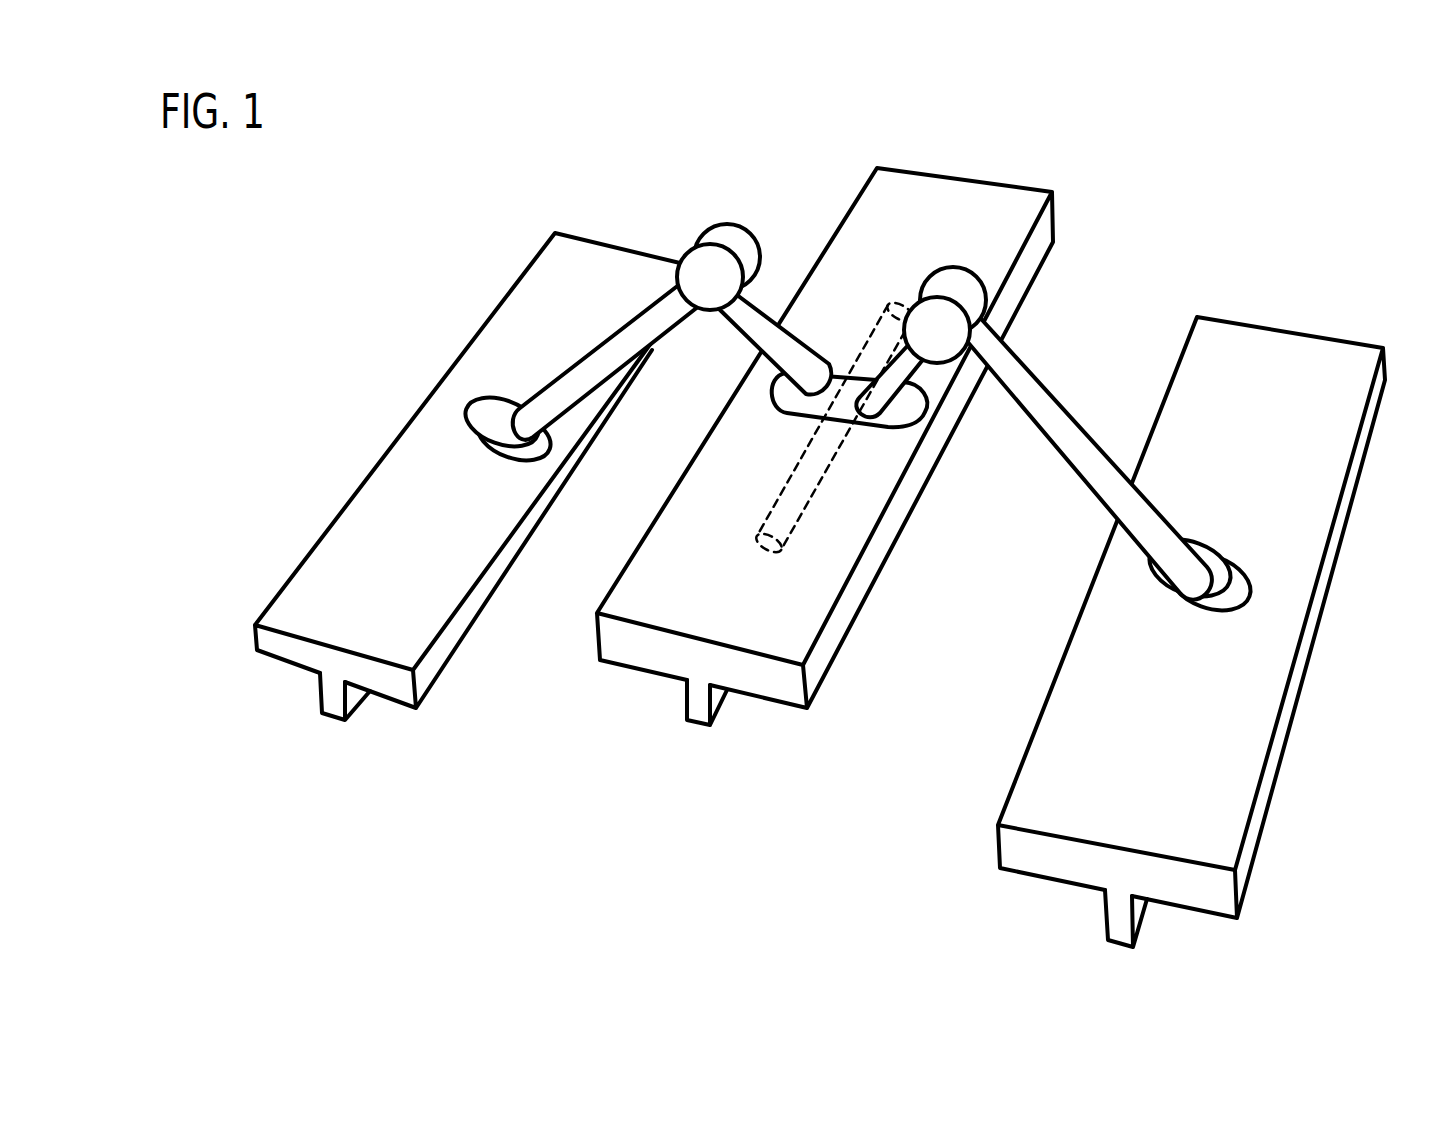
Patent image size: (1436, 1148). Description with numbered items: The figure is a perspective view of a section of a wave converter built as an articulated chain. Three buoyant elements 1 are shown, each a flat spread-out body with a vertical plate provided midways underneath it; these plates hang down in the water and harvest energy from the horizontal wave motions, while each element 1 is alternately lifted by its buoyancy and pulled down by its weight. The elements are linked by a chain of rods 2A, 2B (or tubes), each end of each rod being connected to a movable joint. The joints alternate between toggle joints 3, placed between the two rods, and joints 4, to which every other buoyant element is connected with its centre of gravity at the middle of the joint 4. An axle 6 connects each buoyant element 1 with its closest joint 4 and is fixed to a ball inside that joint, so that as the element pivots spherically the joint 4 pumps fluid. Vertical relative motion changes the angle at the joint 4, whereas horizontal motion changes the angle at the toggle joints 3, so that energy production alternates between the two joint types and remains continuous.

The buoyant element 1 is at (1060, 775).
The rod 2A is at (767, 307).
The rod 2B is at (895, 363).
The toggle joint 3 is at (715, 238).
The joint 4 is at (500, 448).
The axle 6 is at (792, 507).